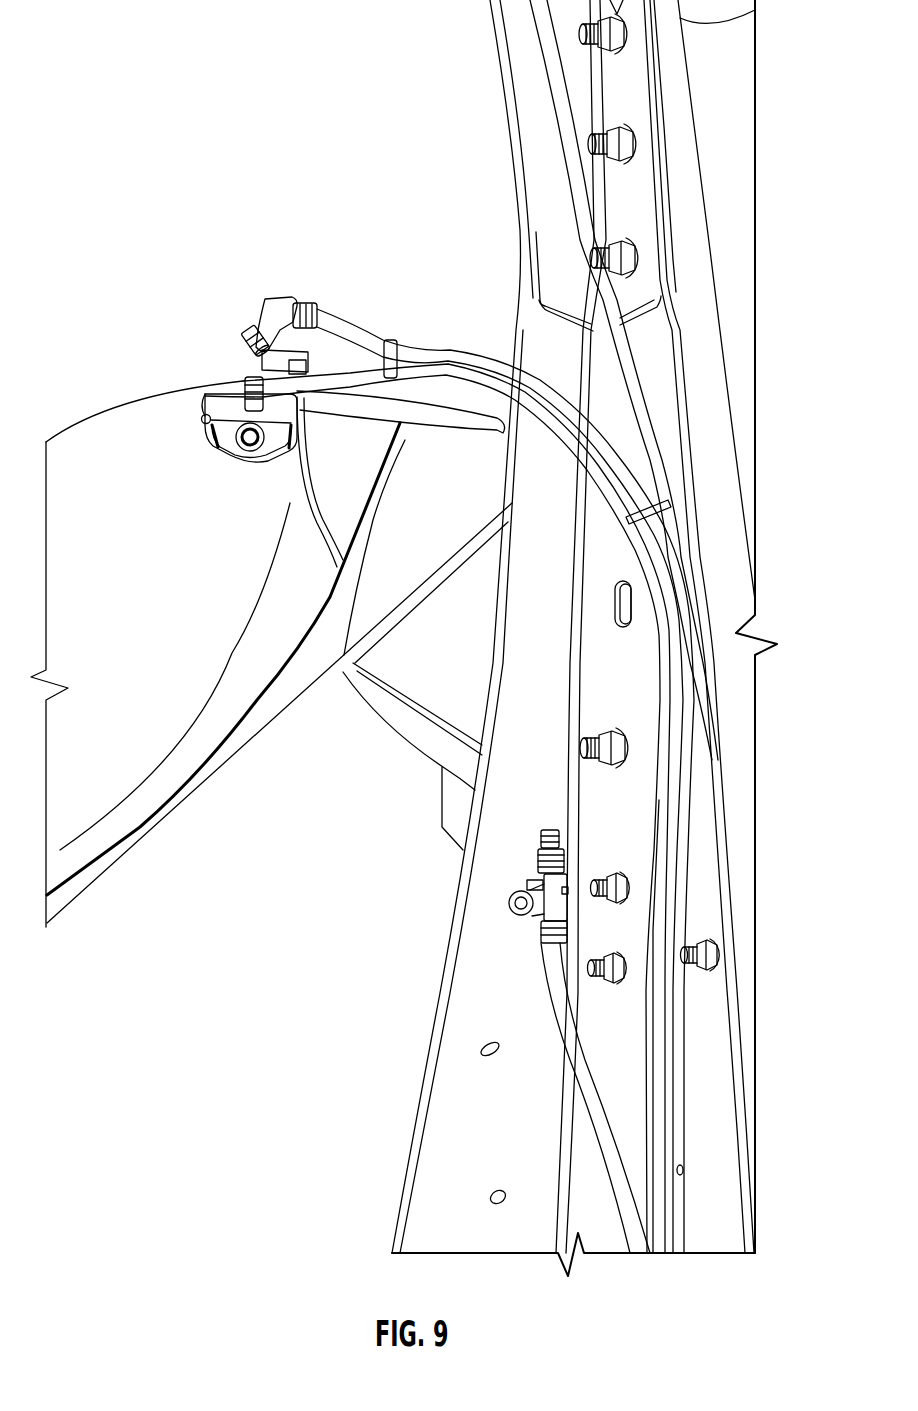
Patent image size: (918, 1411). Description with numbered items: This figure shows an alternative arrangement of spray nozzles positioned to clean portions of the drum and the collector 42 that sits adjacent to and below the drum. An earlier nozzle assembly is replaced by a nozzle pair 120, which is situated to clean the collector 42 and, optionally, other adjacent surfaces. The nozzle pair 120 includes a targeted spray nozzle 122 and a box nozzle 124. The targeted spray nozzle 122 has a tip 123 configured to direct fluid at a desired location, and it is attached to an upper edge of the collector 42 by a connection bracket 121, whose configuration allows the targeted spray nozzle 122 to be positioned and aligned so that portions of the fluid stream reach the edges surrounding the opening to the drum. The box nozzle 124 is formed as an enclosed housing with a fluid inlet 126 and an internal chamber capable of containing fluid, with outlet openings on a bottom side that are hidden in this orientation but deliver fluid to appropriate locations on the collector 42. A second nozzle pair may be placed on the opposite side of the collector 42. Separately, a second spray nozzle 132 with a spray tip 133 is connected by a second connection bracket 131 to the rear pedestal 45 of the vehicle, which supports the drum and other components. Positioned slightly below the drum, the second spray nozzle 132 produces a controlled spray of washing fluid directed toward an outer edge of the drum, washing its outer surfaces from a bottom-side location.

The collector 42 is at (125, 540).
The rear pedestal 45 is at (433, 1130).
The nozzle pair 120 is at (319, 389).
The connection bracket 121 is at (283, 356).
The targeted spray nozzle 122 is at (270, 321).
The tip 123 is at (247, 336).
The box nozzle 124 is at (228, 458).
The fluid inlet 126 is at (206, 421).
The second connection bracket 131 is at (526, 1011).
The second spray nozzle 132 is at (553, 907).
The spray tip 133 is at (553, 828).